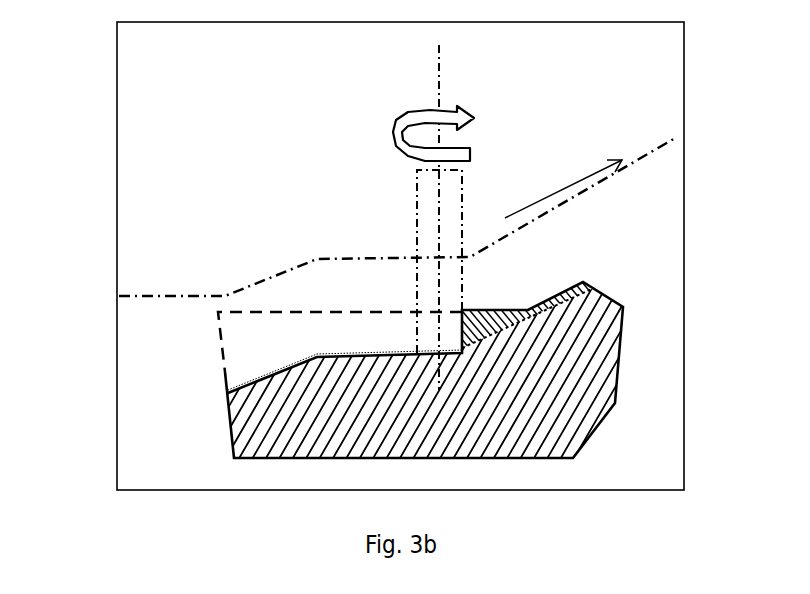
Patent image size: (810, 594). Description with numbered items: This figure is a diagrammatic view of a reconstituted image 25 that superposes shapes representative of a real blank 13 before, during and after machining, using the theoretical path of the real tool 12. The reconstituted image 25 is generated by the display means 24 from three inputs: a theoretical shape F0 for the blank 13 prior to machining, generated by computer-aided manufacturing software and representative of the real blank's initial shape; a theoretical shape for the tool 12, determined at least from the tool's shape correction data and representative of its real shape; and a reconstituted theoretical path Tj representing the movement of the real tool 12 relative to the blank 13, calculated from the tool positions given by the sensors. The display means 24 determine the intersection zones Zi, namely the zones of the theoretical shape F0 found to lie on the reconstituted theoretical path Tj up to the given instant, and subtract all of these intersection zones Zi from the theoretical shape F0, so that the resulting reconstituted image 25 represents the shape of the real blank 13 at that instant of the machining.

The display means 24 is at (117, 63).
The reconstituted image 25 is at (198, 188).
The reconstituted theoretical path Tj is at (222, 294).
The theoretical shape for the blank prior to machining F0 is at (222, 347).
The intersection zones Zi is at (226, 374).
The blank 13 is at (253, 430).
The tool 12 is at (420, 230).